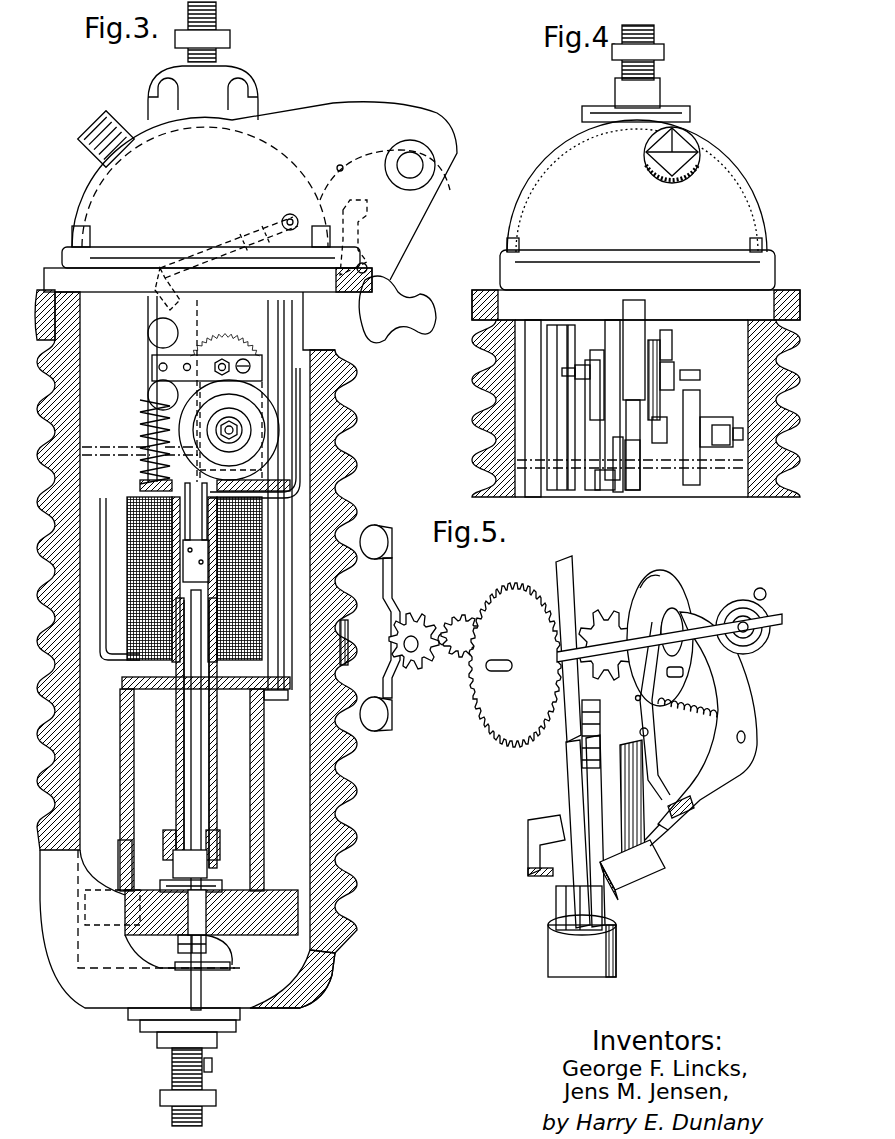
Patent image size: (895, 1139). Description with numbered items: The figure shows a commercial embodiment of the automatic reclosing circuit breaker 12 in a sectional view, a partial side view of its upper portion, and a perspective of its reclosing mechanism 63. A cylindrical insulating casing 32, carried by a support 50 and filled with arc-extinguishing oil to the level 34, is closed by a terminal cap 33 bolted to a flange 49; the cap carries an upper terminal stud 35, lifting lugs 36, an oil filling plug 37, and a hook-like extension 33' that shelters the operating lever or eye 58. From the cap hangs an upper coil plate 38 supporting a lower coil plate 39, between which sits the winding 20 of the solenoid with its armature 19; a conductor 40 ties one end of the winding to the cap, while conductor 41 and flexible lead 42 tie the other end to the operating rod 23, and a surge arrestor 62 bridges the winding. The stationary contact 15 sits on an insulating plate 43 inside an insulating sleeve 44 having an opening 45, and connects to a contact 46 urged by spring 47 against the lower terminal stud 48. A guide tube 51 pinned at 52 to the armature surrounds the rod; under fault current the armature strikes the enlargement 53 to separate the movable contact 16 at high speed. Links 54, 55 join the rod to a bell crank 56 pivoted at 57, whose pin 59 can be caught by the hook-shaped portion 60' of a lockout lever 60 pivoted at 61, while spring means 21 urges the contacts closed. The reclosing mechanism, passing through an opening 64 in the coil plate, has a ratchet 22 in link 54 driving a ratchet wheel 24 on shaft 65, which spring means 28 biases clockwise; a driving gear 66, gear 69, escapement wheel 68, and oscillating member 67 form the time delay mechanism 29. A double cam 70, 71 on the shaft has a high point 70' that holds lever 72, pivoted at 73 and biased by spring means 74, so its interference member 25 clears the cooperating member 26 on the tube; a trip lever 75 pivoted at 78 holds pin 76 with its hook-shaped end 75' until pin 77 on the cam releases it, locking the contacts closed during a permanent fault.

In FIG. 3, the automatic reclosing circuit breaker 12 is at (38, 550).
In FIG. 3, the stationary contact 15 is at (218, 884).
In FIG. 3, the movable contact 16 is at (205, 860).
In FIG. 3, the armature 19 is at (212, 786).
In FIG. 3, the winding 20 is at (255, 532).
In FIG. 3, the spring means 21 is at (262, 226).
In FIG. 5, the ratchet 22 is at (600, 740).
In FIG. 3, the operating rod 23 is at (192, 754).
In FIG. 5, the ratchet wheel 24 is at (600, 612).
In FIG. 4, the interference member 25 is at (620, 470).
In FIG. 5, the interference member 25 is at (622, 808).
In FIG. 4, the cooperating member 26 is at (612, 490).
In FIG. 5, the cooperating member 26 is at (636, 884).
In FIG. 5, the spring means 28 is at (768, 645).
In FIG. 5, the time delay mechanism 29 is at (446, 594).
In FIG. 3, the casing 32 is at (40, 405).
In FIG. 4, the casing 32 is at (490, 420).
In FIG. 3, the terminal cap 33 is at (200, 156).
In FIG. 4, the terminal cap 33 is at (636, 220).
In FIG. 3, the hook-like extension 33' is at (344, 175).
In FIG. 3, the oil level 34 is at (112, 445).
In FIG. 4, the oil level 34 is at (530, 456).
In FIG. 3, the terminal stud 35 is at (218, 22).
In FIG. 4, the terminal stud 35 is at (656, 32).
In FIG. 3, the lifting lugs 36 is at (156, 88).
In FIG. 4, the lifting lugs 36 is at (660, 88).
In FIG. 3, the oil filling plug 37 is at (96, 118).
In FIG. 4, the oil filling plug 37 is at (644, 155).
In FIG. 3, the upper coil plate 38 is at (300, 478).
In FIG. 4, the upper coil plate 38 is at (596, 498).
In FIG. 5, the upper coil plate 38 is at (648, 870).
In FIG. 3, the lower coil plate 39 is at (292, 695).
In FIG. 3, the conductor 40 is at (300, 408).
In FIG. 3, the conductor 41 is at (104, 572).
In FIG. 3, the flexible lead 42 is at (140, 410).
In FIG. 3, the insulating plate 43 is at (262, 932).
In FIG. 3, the insulating sleeve 44 is at (264, 846).
In FIG. 3, the opening 45 is at (125, 884).
In FIG. 3, the contact 46 is at (232, 955).
In FIG. 3, the spring 47 is at (210, 938).
In FIG. 3, the lower terminal stud 48 is at (210, 1080).
In FIG. 3, the flange 49 is at (40, 290).
In FIG. 3, the support 50 is at (345, 740).
In FIG. 3, the guide tube 51 is at (212, 732).
In FIG. 5, the guide tube 51 is at (618, 944).
In FIG. 3, the pin 52 is at (212, 832).
In FIG. 3, the enlargement 53 is at (196, 561).
In FIG. 5, the enlargement 53 is at (556, 904).
In FIG. 4, the link 54 is at (640, 470).
In FIG. 5, the link 54 is at (570, 770).
In FIG. 3, the link 55 is at (200, 300).
In FIG. 4, the link 55 is at (636, 328).
In FIG. 5, the link 55 is at (572, 596).
In FIG. 3, the bell crank 56 is at (225, 248).
In FIG. 3, the pivot 57 is at (286, 212).
In FIG. 3, the operating lever or eye 58 is at (434, 176).
In FIG. 3, the pin 59 is at (343, 168).
In FIG. 3, the lockout lever 60 is at (397, 309).
In FIG. 3, the hook-shaped portion 60' is at (368, 233).
In FIG. 3, the pivot 61 is at (366, 266).
In FIG. 3, the surge arrestor 62 is at (232, 400).
In FIG. 4, the surge arrestor 62 is at (696, 412).
In FIG. 3, the reclosing mechanism 63 is at (234, 345).
In FIG. 4, the reclosing mechanism 63 is at (694, 358).
In FIG. 5, the reclosing mechanism 63 is at (499, 783).
In FIG. 3, the opening 64 is at (200, 485).
In FIG. 5, the opening 64 is at (530, 832).
In FIG. 5, the shaft 65 is at (500, 660).
In FIG. 3, the driving gear 66 is at (240, 340).
In FIG. 4, the driving gear 66 is at (656, 340).
In FIG. 5, the driving gear 66 is at (502, 722).
In FIG. 3, the oscillating member 67 is at (148, 334).
In FIG. 4, the oscillating member 67 is at (660, 443).
In FIG. 3, the escapement wheel 68 is at (185, 355).
In FIG. 5, the escapement wheel 68 is at (440, 660).
In FIG. 4, the gear 69 is at (676, 372).
In FIG. 5, the gear 69 is at (462, 614).
In FIG. 4, the cam 70 is at (583, 373).
In FIG. 5, the cam 70 is at (672, 625).
In FIG. 5, the high point 70' is at (648, 596).
In FIG. 5, the cam 71 is at (668, 612).
In FIG. 4, the lever 72 is at (610, 330).
In FIG. 5, the lever 72 is at (634, 700).
In FIG. 5, the pivot 73 is at (643, 728).
In FIG. 5, the spring means 74 is at (688, 722).
In FIG. 5, the trip lever 75 is at (707, 721).
In FIG. 5, the hook-shaped end 75' is at (679, 832).
In FIG. 5, the pin 76 is at (696, 804).
In FIG. 5, the pin 77 is at (676, 678).
In FIG. 5, the pivot 78 is at (746, 736).